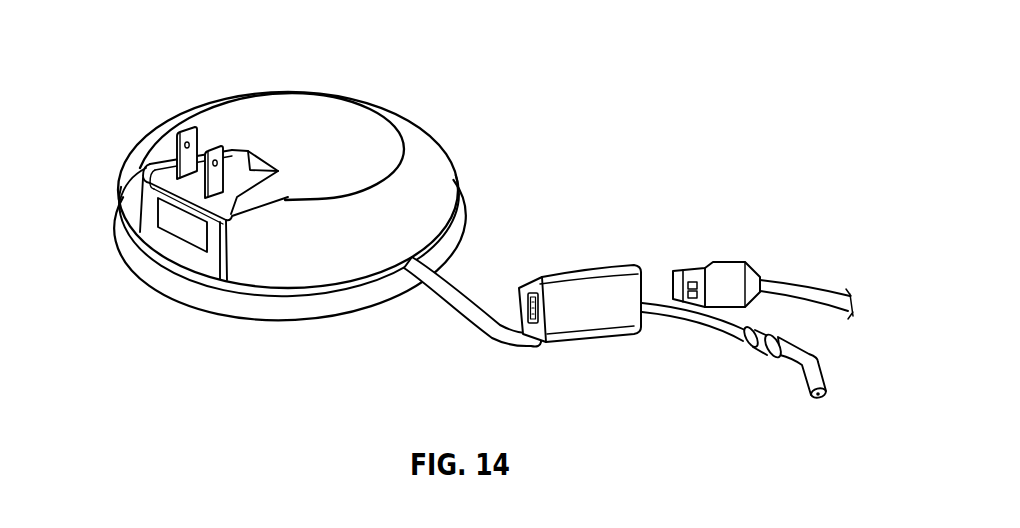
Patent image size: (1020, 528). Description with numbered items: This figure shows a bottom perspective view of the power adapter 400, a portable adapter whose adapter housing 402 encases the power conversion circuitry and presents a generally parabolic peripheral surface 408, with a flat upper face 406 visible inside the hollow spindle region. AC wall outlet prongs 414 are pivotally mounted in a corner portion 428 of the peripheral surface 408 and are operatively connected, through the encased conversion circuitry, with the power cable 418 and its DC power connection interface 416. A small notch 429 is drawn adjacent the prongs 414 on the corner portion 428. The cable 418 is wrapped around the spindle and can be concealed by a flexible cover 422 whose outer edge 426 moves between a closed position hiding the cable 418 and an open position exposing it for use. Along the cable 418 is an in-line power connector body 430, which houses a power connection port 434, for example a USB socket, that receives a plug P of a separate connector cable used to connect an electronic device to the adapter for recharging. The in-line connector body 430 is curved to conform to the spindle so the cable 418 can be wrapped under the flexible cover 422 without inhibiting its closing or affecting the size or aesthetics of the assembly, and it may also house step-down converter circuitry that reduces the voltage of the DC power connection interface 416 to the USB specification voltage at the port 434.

The power adapter 400 is at (156, 66).
The adapter housing 402 is at (431, 161).
The upper face 406 is at (363, 147).
The peripheral surface 408 is at (373, 248).
The AC wall outlet prongs 414 is at (181, 134).
The DC power connection interface 416 is at (802, 368).
The power cable 418 is at (692, 317).
The flexible cover 422 is at (315, 308).
The outer edge 426 is at (461, 206).
The corner portion 428 is at (232, 237).
The notch 429 is at (252, 167).
The in-line power connector body 430 is at (598, 268).
The power connection port 434 is at (521, 289).
The plug P is at (725, 265).